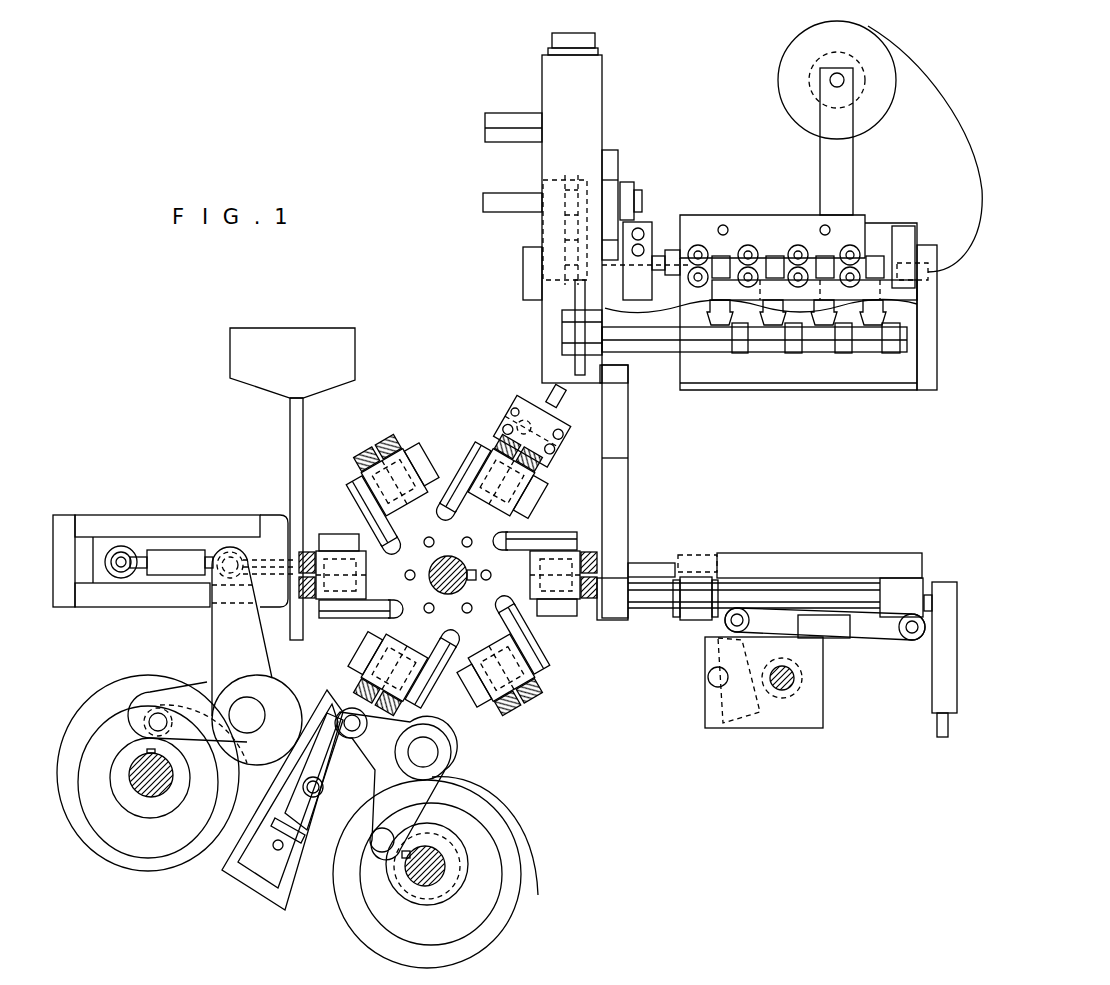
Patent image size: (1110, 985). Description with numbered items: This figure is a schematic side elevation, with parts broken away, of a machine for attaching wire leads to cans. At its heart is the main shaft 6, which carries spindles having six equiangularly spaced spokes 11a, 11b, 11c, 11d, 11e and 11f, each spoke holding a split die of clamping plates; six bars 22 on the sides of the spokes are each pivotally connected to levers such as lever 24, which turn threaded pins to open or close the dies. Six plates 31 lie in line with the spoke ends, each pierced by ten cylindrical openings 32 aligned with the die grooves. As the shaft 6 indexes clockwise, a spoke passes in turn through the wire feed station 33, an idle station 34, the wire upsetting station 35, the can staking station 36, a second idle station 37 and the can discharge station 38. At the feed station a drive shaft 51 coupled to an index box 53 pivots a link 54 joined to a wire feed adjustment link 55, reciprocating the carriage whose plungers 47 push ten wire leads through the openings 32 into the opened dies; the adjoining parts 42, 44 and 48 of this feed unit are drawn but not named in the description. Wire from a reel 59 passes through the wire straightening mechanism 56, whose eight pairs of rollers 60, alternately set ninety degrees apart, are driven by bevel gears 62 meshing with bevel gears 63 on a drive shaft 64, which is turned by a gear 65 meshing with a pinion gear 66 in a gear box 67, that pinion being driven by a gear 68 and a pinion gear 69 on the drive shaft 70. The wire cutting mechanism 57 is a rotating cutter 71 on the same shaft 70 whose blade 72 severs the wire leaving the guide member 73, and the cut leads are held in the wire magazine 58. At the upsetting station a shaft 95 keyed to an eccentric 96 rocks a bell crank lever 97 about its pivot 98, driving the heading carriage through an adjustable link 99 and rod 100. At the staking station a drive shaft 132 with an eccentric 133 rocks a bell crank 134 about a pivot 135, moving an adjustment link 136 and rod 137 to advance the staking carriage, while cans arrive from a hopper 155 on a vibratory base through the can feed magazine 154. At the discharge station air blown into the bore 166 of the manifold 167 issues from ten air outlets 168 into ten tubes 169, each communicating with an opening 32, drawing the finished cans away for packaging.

The main shaft 6 is at (440, 562).
The spoke 11a is at (505, 584).
The spoke 11b is at (479, 639).
The spoke 11c is at (406, 639).
The spoke 11d is at (374, 584).
The spoke 11e is at (399, 528).
The spoke 11f is at (474, 531).
The bar 22 is at (376, 522).
The lever 24 is at (440, 485).
The plate 31 is at (398, 444).
The cylindrical opening 32 is at (380, 447).
The wire feed station 33 is at (792, 638).
The idle station 34 is at (474, 766).
The wire upsetting station 35 is at (447, 728).
The can staking station 36 is at (175, 551).
The idle station 37 is at (412, 428).
The can discharge station 38 is at (572, 462).
The bearing block 42 is at (715, 575).
The guide beam 44 is at (800, 555).
The wire feed plunger 47 is at (700, 555).
The push rod 48 is at (643, 563).
The drive shaft 51 is at (795, 680).
The index box 53 is at (783, 728).
The link 54 is at (726, 622).
The wire feed adjustment link 55 is at (830, 640).
The wire straightening mechanism 56 is at (771, 316).
The wire cutting mechanism 57 is at (564, 208).
The wire magazine 58 is at (639, 492).
The reel 59 is at (778, 70).
The rollers 60 is at (700, 245).
The bevel gear 62 is at (715, 326).
The bevel gear 63 is at (738, 353).
The drive shaft 64 is at (650, 352).
The gear 65 is at (614, 378).
The pinion gear 66 is at (562, 318).
The gear box 67 is at (540, 236).
The gear 68 is at (522, 266).
The pinion gear 69 is at (572, 178).
The drive shaft 70 is at (490, 193).
The rotating cutter 71 is at (610, 150).
The blade 72 is at (644, 261).
The guide member 73 is at (636, 202).
The shaft 95 is at (446, 870).
The eccentric 96 is at (462, 892).
The bell crank lever 97 is at (462, 792).
The pivot 98 is at (451, 760).
The adjustable link 99 is at (270, 852).
The rod 100 is at (278, 811).
The drive shaft 132 is at (140, 780).
The eccentric 133 is at (145, 815).
The bell crank 134 is at (212, 632).
The pivot 135 is at (245, 697).
The adjustment link 136 is at (178, 550).
The rod 137 is at (112, 575).
The can feed magazine 154 is at (290, 428).
The hopper 155 is at (230, 352).
The bore 166 is at (515, 408).
The manifold 167 is at (507, 426).
The air outlet 168 is at (530, 404).
The tube 169 is at (565, 398).